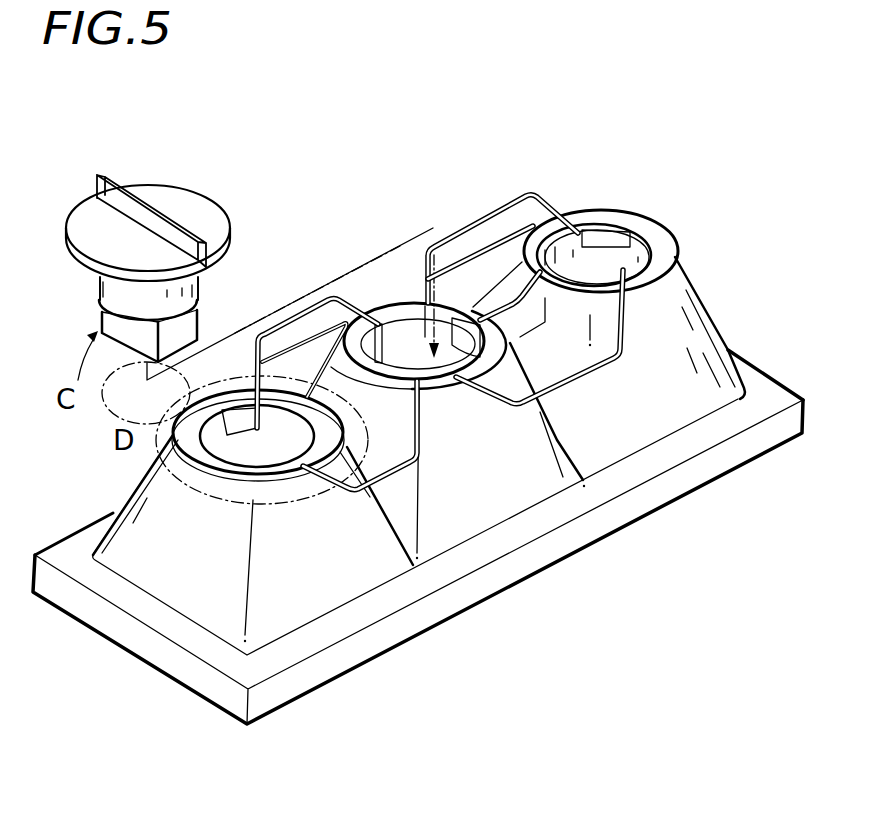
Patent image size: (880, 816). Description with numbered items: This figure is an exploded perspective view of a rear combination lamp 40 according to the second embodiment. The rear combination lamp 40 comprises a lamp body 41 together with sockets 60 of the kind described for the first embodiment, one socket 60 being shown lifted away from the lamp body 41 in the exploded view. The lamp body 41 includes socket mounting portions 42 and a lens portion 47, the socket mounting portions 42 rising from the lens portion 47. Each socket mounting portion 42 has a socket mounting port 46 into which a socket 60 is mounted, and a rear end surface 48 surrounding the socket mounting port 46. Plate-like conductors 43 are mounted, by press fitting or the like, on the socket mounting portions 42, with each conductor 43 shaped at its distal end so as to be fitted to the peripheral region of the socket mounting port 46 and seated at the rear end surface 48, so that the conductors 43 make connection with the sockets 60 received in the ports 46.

The rear combination lamp 40 is at (418, 410).
The lamp body 41 is at (418, 433).
The socket mounting portion 42 is at (370, 567).
The plate-like conductor 43 is at (512, 303).
The socket mounting port 46 is at (627, 263).
The lens portion 47 is at (147, 645).
The rear end surface 48 is at (607, 215).
The socket 60 is at (246, 194).